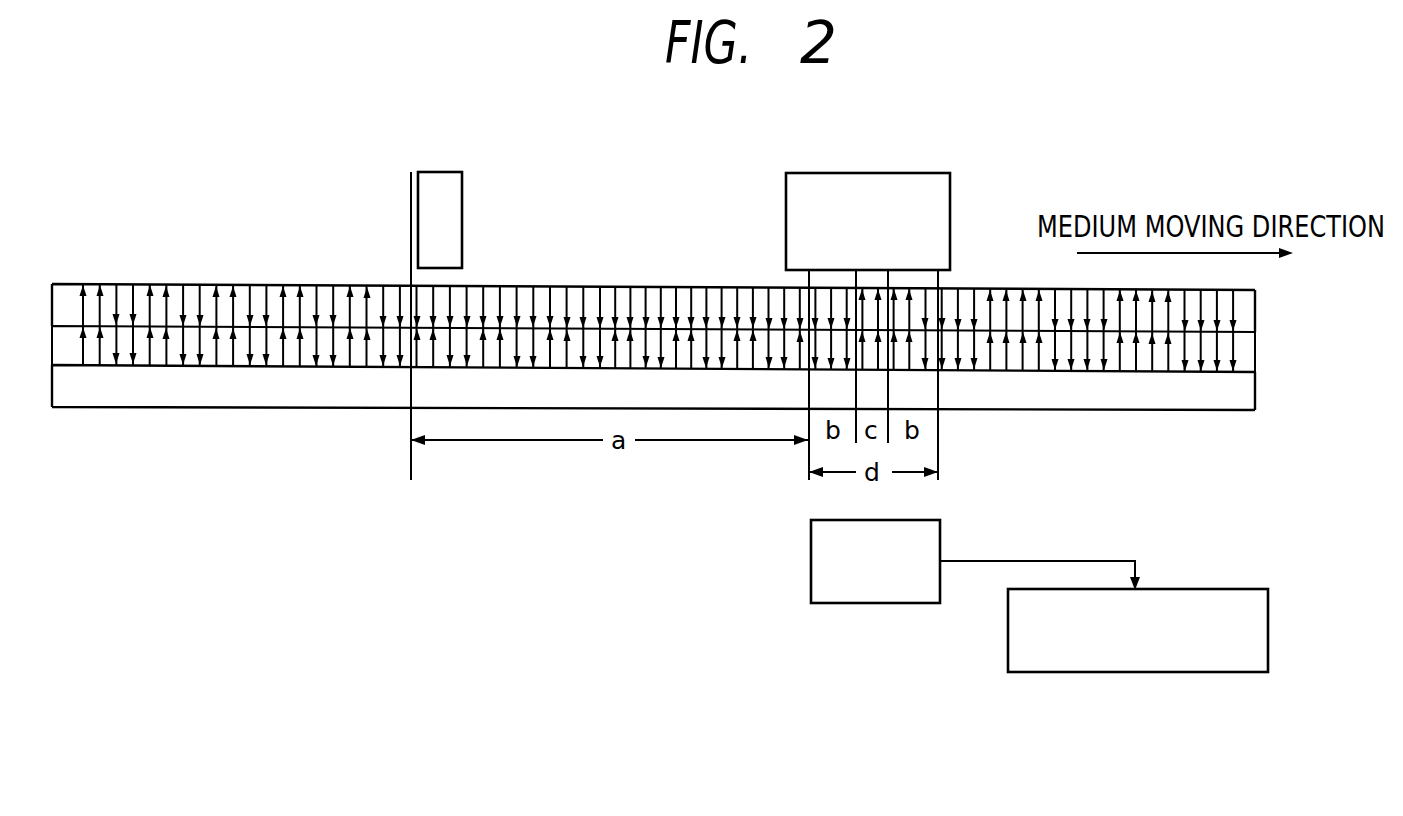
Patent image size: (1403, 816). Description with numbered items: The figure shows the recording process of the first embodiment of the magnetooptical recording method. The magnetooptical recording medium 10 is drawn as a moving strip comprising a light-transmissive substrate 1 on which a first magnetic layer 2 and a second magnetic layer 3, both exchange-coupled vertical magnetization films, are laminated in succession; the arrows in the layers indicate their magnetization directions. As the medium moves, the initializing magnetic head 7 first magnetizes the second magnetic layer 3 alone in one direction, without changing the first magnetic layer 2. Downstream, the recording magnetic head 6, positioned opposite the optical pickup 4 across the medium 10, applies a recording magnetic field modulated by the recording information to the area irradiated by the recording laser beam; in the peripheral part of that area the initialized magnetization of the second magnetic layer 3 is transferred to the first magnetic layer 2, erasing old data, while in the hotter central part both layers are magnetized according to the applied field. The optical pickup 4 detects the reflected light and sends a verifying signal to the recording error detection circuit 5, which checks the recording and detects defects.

The magnetooptical recording medium 10 is at (46, 272).
The light-transmissive substrate 1 is at (1258, 390).
The first magnetic layer 2 is at (1258, 346).
The second magnetic layer 3 is at (1258, 306).
The optical pickup 4 is at (820, 604).
The recording error detection circuit 5 is at (1227, 589).
The recording magnetic head 6 is at (928, 173).
The initializing magnetic head 7 is at (462, 183).